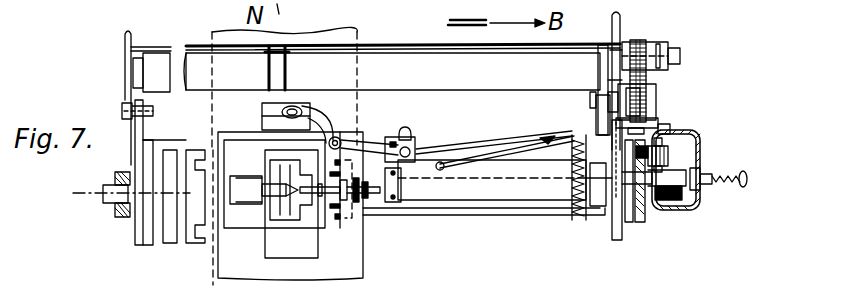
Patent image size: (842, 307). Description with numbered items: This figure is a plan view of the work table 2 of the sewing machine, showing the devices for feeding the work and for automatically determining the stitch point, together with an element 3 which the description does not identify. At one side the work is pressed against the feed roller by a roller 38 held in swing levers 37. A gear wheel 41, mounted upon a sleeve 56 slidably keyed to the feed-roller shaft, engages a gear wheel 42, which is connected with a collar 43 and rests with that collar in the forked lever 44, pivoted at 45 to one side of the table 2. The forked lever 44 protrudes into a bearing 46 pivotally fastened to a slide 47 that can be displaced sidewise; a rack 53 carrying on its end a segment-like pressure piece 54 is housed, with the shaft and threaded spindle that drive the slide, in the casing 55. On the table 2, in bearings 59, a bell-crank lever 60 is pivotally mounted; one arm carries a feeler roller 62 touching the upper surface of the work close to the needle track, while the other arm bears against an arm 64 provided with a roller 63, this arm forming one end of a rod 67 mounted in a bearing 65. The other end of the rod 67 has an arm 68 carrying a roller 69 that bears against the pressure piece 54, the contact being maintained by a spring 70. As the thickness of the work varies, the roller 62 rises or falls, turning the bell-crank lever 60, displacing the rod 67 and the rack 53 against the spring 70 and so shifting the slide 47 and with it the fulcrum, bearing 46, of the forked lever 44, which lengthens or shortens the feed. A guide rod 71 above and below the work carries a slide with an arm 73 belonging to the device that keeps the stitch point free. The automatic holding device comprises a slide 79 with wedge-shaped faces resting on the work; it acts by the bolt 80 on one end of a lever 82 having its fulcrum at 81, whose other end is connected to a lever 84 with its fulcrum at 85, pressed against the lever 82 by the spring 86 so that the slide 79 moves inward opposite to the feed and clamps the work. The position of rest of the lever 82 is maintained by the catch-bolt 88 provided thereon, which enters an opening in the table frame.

The work table 2 is at (484, 222).
The shaft 3 is at (122, 200).
The swing levers 37 is at (130, 90).
The roller 38 is at (152, 64).
The gear wheel 41 is at (646, 42).
The gear wheel 42 is at (646, 100).
The collar 43 is at (598, 104).
The forked lever 44 is at (650, 118).
The pivot 45 is at (656, 92).
The bearing 46 is at (670, 156).
The slide 47 is at (670, 148).
The rack 53 is at (672, 202).
The segment-like pressure piece 54 is at (642, 212).
The casing 55 is at (700, 196).
The sleeve 56 is at (672, 52).
The bearings 59 is at (346, 220).
The bell-crank lever 60 is at (330, 216).
The feeler roller 62 is at (300, 222).
The roller 63 is at (380, 205).
The arm 64 is at (368, 170).
The bearing 65 is at (401, 186).
The rod 67 is at (468, 178).
The arm 68 is at (600, 208).
The roller 69 is at (624, 224).
The spring 70 is at (720, 182).
The guide rod 71 is at (228, 238).
The arm 73 is at (270, 200).
The slide 79 is at (262, 116).
The bolt 80 is at (300, 100).
The fulcrum 81 is at (346, 140).
The lever 82 is at (325, 128).
The lever 84 is at (505, 148).
The fulcrum 85 is at (535, 148).
The spring 86 is at (575, 150).
The catch-bolt 88 is at (440, 142).